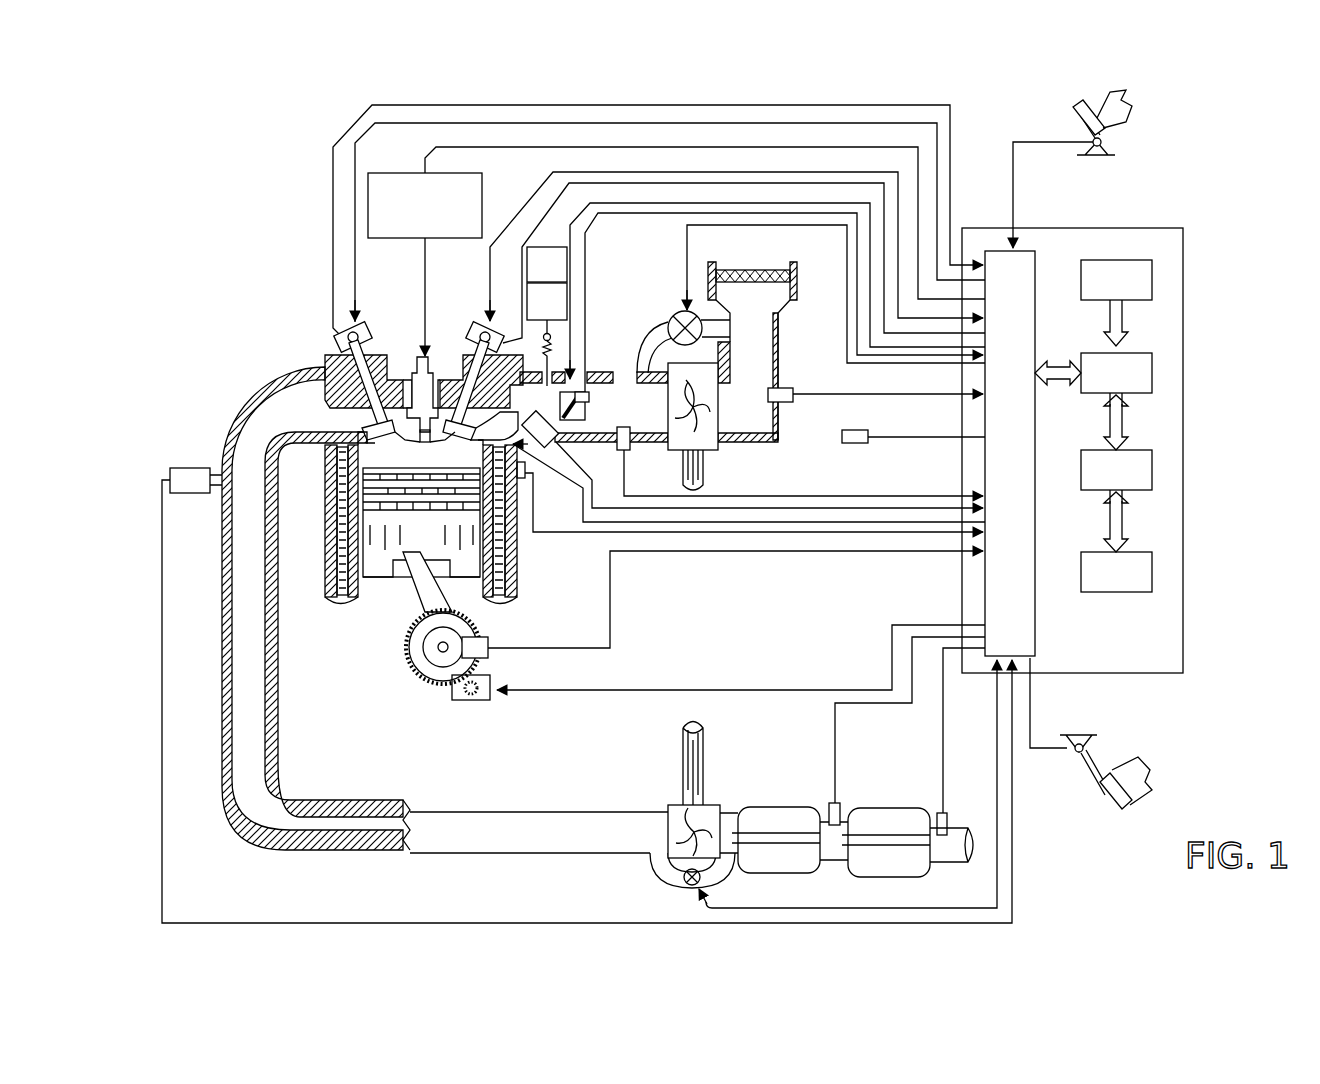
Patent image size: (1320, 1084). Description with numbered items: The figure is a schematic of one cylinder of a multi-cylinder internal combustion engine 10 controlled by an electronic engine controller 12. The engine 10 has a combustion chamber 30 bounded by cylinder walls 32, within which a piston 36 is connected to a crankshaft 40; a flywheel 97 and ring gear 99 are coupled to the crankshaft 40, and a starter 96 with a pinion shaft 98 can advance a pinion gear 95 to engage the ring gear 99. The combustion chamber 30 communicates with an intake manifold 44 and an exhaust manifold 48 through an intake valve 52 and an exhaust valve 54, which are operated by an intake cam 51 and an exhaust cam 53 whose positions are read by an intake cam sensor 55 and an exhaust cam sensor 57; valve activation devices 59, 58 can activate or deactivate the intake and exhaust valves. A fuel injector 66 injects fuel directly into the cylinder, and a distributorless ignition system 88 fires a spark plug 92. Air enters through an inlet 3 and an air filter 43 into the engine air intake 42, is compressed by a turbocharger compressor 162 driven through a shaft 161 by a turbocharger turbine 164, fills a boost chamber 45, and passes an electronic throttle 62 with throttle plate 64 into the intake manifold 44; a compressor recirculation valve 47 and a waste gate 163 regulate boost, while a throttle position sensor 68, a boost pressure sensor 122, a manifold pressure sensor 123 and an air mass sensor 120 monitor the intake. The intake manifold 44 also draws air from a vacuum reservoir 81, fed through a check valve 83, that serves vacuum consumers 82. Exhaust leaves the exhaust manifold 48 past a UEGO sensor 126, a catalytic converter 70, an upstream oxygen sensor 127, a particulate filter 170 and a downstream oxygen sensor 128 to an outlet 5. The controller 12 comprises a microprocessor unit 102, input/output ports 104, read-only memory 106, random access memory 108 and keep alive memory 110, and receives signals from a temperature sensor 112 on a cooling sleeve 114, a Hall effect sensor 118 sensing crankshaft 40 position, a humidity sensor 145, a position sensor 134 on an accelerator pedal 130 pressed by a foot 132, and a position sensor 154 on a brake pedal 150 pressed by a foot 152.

The internal combustion engine 10 is at (262, 310).
The electronic engine controller 12 is at (1183, 228).
The inlet 3 is at (764, 261).
The outlet 5 is at (966, 820).
The combustion chamber 30 is at (422, 452).
The cylinder walls 32 is at (362, 600).
The piston 36 is at (400, 600).
The crankshaft 40 is at (425, 672).
The engine air intake 42 is at (664, 272).
The air filter 43 is at (735, 284).
The intake manifold 44 is at (549, 411).
The boost chamber 45 is at (639, 414).
The compressor recirculation valve 47 is at (672, 316).
The exhaust manifold 48 is at (305, 424).
The intake cam 51 is at (487, 322).
The intake valve 52 is at (470, 410).
The exhaust cam 53 is at (365, 325).
The exhaust valve 54 is at (345, 405).
The intake cam sensor 55 is at (503, 342).
The exhaust cam sensor 57 is at (343, 340).
The valve activation device 58 is at (366, 345).
The valve activation device 59 is at (470, 360).
The electronic throttle 62 is at (587, 400).
The throttle plate 64 is at (575, 415).
The fuel injector 66 is at (527, 475).
The throttle position sensor 68 is at (598, 372).
The catalytic converter 70 is at (755, 805).
The vacuum reservoir 81 is at (547, 334).
The vacuum consumers 82 is at (547, 264).
The check valve 83 is at (555, 337).
The distributorless ignition system 88 is at (380, 173).
The spark plug 92 is at (430, 362).
The pinion gear 95 is at (471, 696).
The starter 96 is at (485, 700).
The flywheel 97 is at (418, 655).
The pinion shaft 98 is at (465, 690).
The ring gear 99 is at (438, 683).
The microprocessor unit 102 is at (1152, 373).
The input/output ports 104 is at (1035, 262).
The read-only memory 106 is at (1152, 280).
The random access memory 108 is at (1152, 470).
The keep alive memory 110 is at (1152, 572).
The temperature sensor 112 is at (533, 490).
The cooling sleeve 114 is at (520, 553).
The Hall effect sensor 118 is at (488, 640).
The air mass sensor 120 is at (792, 388).
The pressure sensor 122 is at (625, 450).
The pressure sensor 123 is at (560, 442).
The UEGO sensor 126 is at (170, 474).
The universal oxygen sensor 127 is at (835, 803).
The universal oxygen sensor 128 is at (942, 813).
The accelerator pedal 130 is at (1076, 110).
The foot 132 is at (1122, 106).
The position sensor 134 is at (1110, 150).
The humidity sensor 145 is at (862, 430).
The brake pedal 150 is at (1105, 795).
The foot 152 is at (1130, 760).
The position sensor 154 is at (1068, 745).
The shaft 161 is at (705, 465).
The turbocharger compressor 162 is at (715, 430).
The waste gate 163 is at (682, 890).
The turbocharger turbine 164 is at (668, 805).
The particulate filter 170 is at (865, 808).